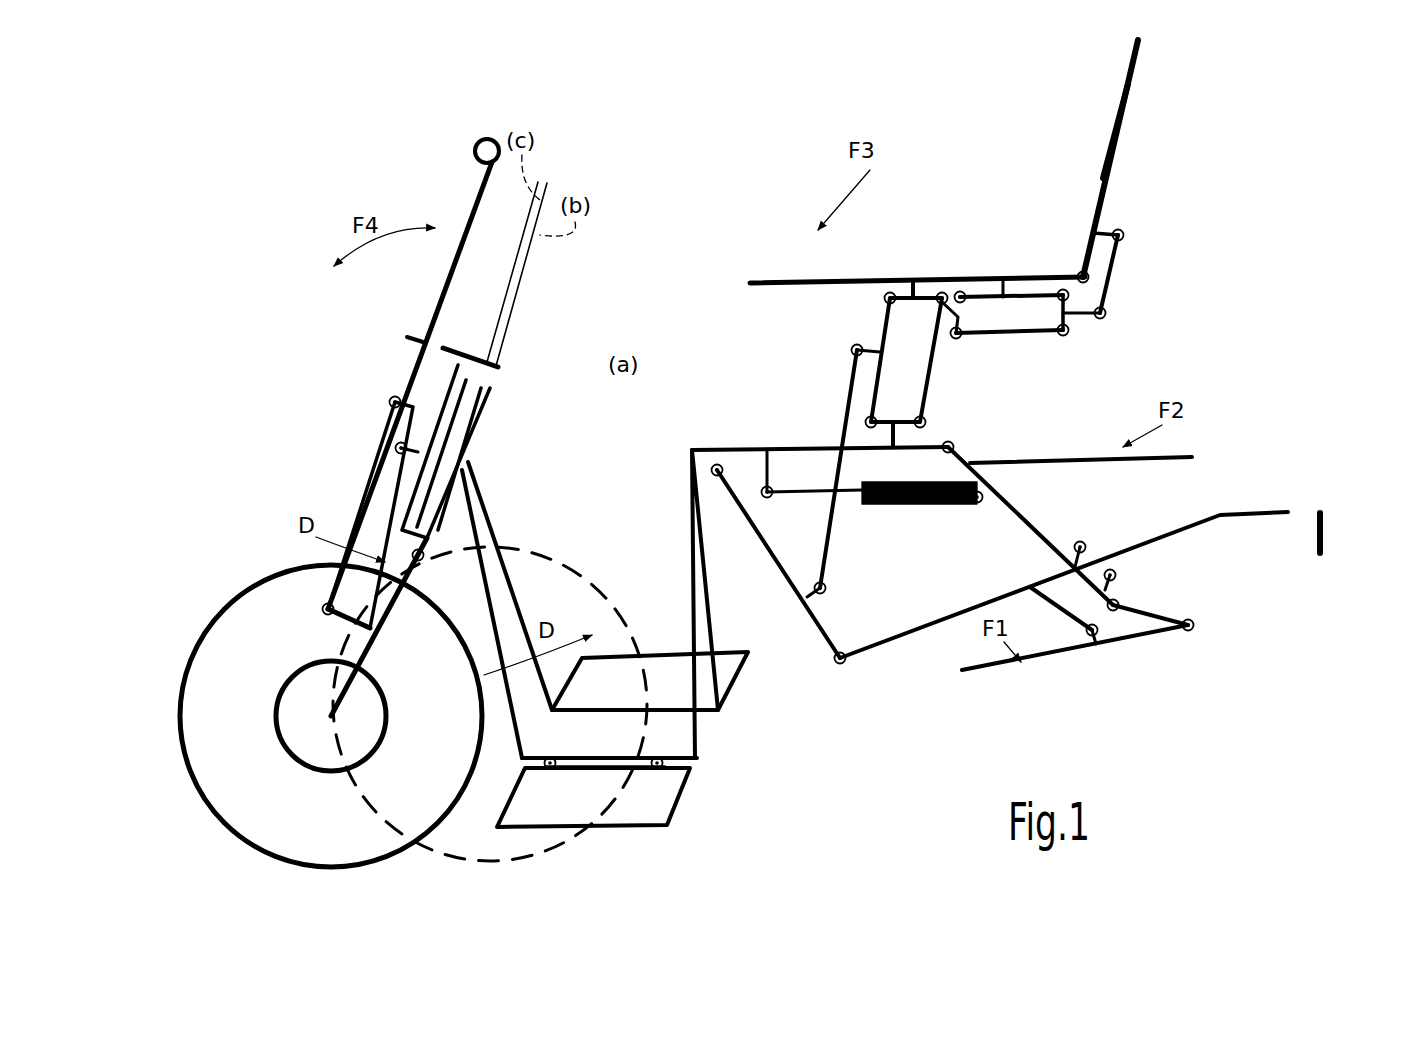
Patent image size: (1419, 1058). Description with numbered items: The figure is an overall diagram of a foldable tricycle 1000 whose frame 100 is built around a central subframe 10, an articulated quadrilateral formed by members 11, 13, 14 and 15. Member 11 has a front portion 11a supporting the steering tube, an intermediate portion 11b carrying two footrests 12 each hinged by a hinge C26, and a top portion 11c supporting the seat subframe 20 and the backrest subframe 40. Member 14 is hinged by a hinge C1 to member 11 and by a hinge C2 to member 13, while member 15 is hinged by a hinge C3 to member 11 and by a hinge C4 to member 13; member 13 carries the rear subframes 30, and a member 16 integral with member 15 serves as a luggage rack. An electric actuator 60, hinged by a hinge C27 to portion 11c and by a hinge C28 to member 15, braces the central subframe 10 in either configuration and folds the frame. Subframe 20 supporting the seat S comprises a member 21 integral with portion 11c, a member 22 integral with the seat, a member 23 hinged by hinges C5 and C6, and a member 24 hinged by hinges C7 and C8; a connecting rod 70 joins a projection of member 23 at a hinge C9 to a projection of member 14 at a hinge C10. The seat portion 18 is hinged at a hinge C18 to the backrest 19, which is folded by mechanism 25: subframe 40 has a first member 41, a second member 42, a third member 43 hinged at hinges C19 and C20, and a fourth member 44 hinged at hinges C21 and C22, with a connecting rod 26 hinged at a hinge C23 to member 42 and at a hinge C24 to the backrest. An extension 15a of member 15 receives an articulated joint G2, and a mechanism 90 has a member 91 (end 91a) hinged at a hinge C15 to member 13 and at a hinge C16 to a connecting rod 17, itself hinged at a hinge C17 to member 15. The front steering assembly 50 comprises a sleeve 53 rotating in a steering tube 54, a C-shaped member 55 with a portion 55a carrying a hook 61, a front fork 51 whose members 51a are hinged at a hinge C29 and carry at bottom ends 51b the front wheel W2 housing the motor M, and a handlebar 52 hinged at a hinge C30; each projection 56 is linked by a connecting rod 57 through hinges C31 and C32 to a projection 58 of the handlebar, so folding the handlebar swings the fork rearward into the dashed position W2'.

The tricycle 1000 is at (912, 170).
The frame 100 is at (1197, 152).
The seat S is at (1122, 137).
The backrest 19 is at (1103, 176).
The seat portion 18 is at (822, 283).
The hinge C18 is at (1081, 274).
The hinge C24 is at (1123, 233).
The connecting rod 26 is at (1106, 280).
The hinge C20 is at (1069, 296).
The hinge C23 is at (1106, 314).
The folding mechanism 25 is at (1085, 328).
The hinge C22 is at (1070, 333).
The second member 42 is at (1060, 313).
The first member 41 is at (968, 312).
The fourth member 44 is at (1002, 336).
The subframe 40 is at (1033, 334).
The subframe 20 is at (948, 368).
The member 24 is at (920, 348).
The third member 43 is at (1026, 290).
The hinge C19 is at (963, 294).
The hinge C8 is at (942, 294).
The hinge C6 is at (888, 298).
The member 22 is at (913, 300).
The member 23 is at (885, 340).
The hinge C21 is at (954, 336).
The member 21 is at (893, 420).
The hinge C5 is at (873, 428).
The hinge C7 is at (926, 422).
The hinge C9 is at (852, 350).
The connecting rod 70 is at (843, 408).
The hinge C10 is at (826, 590).
The top portion 11c is at (793, 448).
The hinge C3 is at (955, 446).
The hinge C1 is at (714, 468).
The hinge C27 is at (763, 490).
The electric actuator 60 is at (913, 506).
The hinge C28 is at (978, 503).
The member 14 is at (776, 563).
The hinge C2 is at (840, 664).
The member 13 is at (892, 662).
The rear subframe 30 is at (1328, 535).
The member 16 is at (1192, 458).
The member 15 is at (1012, 510).
The central subframe 10 is at (1040, 520).
The hinge C4 is at (1084, 545).
The articulated joint G2 is at (1116, 575).
The hinge C17 is at (1107, 607).
The extension 15a is at (1120, 605).
The connecting rod 17 is at (1162, 621).
The hinge C16 is at (1192, 628).
The mechanism 90 is at (1075, 657).
The member 91 is at (1032, 660).
The hinge C15 is at (1096, 634).
The link end 91a is at (962, 672).
The member 11 is at (700, 592).
The front portion 11a is at (478, 522).
The intermediate portion 11b is at (592, 757).
The hinge C26 is at (546, 766).
The footrest 12 is at (625, 830).
The front direction wheel W2 is at (331, 731).
The bottom end 51b is at (340, 717).
The electric drive motor M is at (290, 737).
The folded front wheel position W2' is at (490, 724).
The front fork 51 is at (367, 655).
The fork member 51a is at (353, 624).
The hinge C29 is at (424, 553).
The hinge C31 is at (325, 606).
The projection 56 is at (345, 630).
The connecting rod 57 is at (358, 512).
The hinge C30 is at (396, 447).
The hinge C32 is at (392, 400).
The projection 58 is at (394, 400).
The front steering assembly 50 is at (340, 462).
The sleeve 53 is at (456, 452).
The steering tube 54 is at (482, 420).
The C-shaped member 55 is at (447, 397).
The portion 55a is at (492, 370).
The hook 61 is at (498, 362).
The handlebar 52 is at (478, 218).